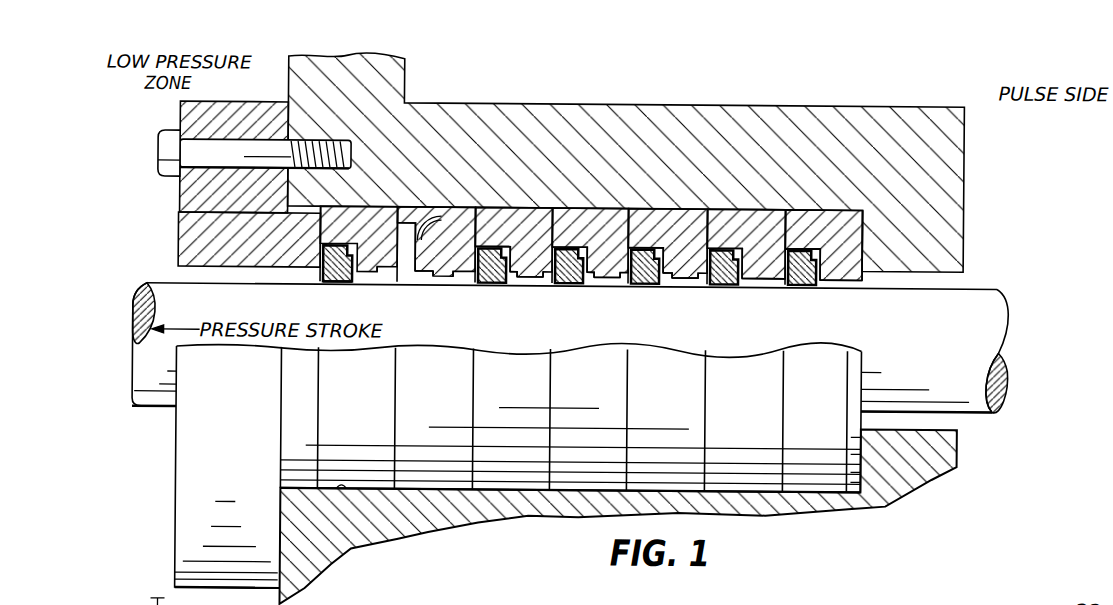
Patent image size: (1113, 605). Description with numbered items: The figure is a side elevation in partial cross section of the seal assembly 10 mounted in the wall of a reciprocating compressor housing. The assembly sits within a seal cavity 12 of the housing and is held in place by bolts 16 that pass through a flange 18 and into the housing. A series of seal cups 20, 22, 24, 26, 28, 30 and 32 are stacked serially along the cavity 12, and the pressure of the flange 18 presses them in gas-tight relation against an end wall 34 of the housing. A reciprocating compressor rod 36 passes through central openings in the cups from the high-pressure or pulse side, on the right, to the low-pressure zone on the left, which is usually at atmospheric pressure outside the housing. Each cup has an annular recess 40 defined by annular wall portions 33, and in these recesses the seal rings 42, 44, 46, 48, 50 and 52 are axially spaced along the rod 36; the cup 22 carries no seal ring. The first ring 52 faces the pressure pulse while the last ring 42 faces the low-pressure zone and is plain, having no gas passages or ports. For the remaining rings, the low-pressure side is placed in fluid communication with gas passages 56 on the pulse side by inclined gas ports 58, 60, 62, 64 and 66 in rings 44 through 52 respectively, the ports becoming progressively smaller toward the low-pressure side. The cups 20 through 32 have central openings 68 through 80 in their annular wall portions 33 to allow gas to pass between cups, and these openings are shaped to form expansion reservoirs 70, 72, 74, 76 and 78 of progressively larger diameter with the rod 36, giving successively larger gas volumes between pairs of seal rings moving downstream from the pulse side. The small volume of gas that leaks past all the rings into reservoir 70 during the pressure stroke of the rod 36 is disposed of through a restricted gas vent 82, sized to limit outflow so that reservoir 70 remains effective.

The seal assembly 10 is at (373, 555).
The seal cavity 12 is at (334, 489).
The bolts 16 is at (155, 150).
The flange 18 is at (177, 470).
The seal cup 20 is at (334, 205).
The seal cup 22 is at (409, 205).
The seal cup 24 is at (492, 205).
The seal cup 26 is at (592, 205).
The seal cup 28 is at (682, 201).
The seal cup 30 is at (748, 201).
The seal cup 32 is at (792, 205).
The annular wall portions 33 is at (377, 271).
The end wall 34 is at (953, 222).
The compressor rod 36 is at (972, 299).
The annular recess 40 is at (806, 244).
The seal ring 42 is at (326, 266).
The seal ring 44 is at (475, 244).
The seal ring 46 is at (550, 244).
The seal ring 48 is at (624, 246).
The seal ring 50 is at (703, 253).
The seal ring 52 is at (782, 253).
The gas passages 56 is at (826, 258).
The gas port 58 is at (485, 282).
The gas port 60 is at (577, 282).
The gas port 62 is at (648, 281).
The gas port 64 is at (720, 271).
The gas port 66 is at (816, 277).
The central opening 68 is at (359, 278).
The expansion reservoir 70 is at (412, 273).
The expansion reservoir 72 is at (525, 276).
The expansion reservoir 74 is at (604, 275).
The expansion reservoir 76 is at (686, 276).
The expansion reservoir 78 is at (768, 280).
The central opening 80 is at (847, 278).
The gas vent 82 is at (440, 208).